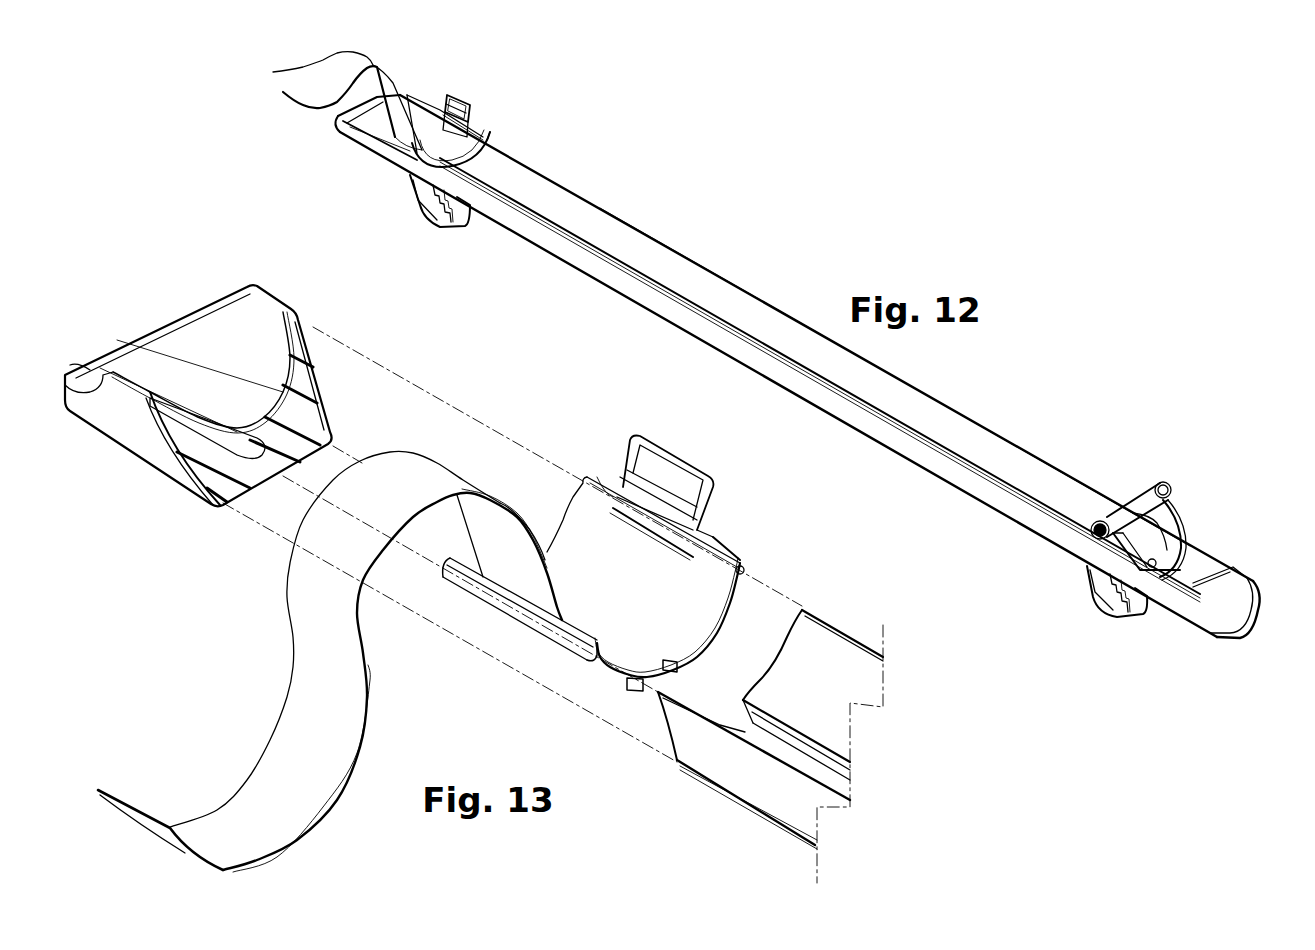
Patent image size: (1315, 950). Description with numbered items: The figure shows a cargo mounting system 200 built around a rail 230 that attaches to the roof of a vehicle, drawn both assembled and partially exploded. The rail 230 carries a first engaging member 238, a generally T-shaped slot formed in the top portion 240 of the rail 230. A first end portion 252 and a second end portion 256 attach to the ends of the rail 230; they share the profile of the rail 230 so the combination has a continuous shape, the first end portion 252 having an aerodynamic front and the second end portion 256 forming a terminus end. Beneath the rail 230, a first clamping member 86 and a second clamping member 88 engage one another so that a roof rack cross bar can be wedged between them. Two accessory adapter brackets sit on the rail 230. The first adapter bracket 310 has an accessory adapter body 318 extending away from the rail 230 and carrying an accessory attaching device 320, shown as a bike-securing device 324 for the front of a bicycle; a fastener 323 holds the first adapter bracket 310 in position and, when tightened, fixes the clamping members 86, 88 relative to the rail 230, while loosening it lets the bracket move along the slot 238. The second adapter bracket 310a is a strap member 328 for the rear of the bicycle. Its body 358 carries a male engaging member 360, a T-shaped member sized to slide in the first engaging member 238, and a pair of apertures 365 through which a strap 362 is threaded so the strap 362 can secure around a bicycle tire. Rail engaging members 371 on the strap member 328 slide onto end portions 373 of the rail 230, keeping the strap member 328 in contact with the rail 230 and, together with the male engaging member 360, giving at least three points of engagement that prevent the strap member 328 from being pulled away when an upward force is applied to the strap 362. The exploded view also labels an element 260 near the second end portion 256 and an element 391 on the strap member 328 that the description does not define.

In FIG. 12, the first clamping member 86 is at (420, 193).
In FIG. 12, the second clamping member 88 is at (450, 220).
In FIG. 12, the cargo mounting system 200 is at (740, 273).
In FIG. 12, the rail 230 is at (563, 197).
In FIG. 13, the rail 230 is at (843, 667).
In FIG. 12, the first engaging member 238 is at (970, 460).
In FIG. 13, the first engaging member 238 is at (770, 740).
In FIG. 12, the top portion 240 is at (643, 247).
In FIG. 12, the first end portion 252 is at (1237, 590).
In FIG. 12, the second end portion 256 is at (353, 130).
In FIG. 13, the second end portion 256 is at (260, 313).
In FIG. 13, the strap guide 260 is at (183, 473).
In FIG. 12, the first adapter bracket 310 is at (1180, 510).
In FIG. 12, the second adapter bracket 310a is at (477, 102).
In FIG. 13, the second adapter bracket 310a is at (693, 457).
In FIG. 12, the accessory adapter body 318 is at (1117, 547).
In FIG. 12, the accessory attaching device 320 is at (1133, 502).
In FIG. 12, the fastener 323 is at (1173, 543).
In FIG. 12, the bike-securing device 324 is at (1167, 493).
In FIG. 12, the strap member 328 is at (430, 125).
In FIG. 13, the strap member 328 is at (710, 550).
In FIG. 13, the body 358 is at (610, 607).
In FIG. 13, the male engaging member 360 is at (623, 690).
In FIG. 12, the strap 362 is at (335, 74).
In FIG. 13, the strap 362 is at (277, 805).
In FIG. 13, the apertures 365 is at (613, 497).
In FIG. 13, the rail engaging member 371 is at (742, 567).
In FIG. 13, the end portions 373 is at (810, 610).
In FIG. 13, the bracket cross bar 391 is at (450, 573).